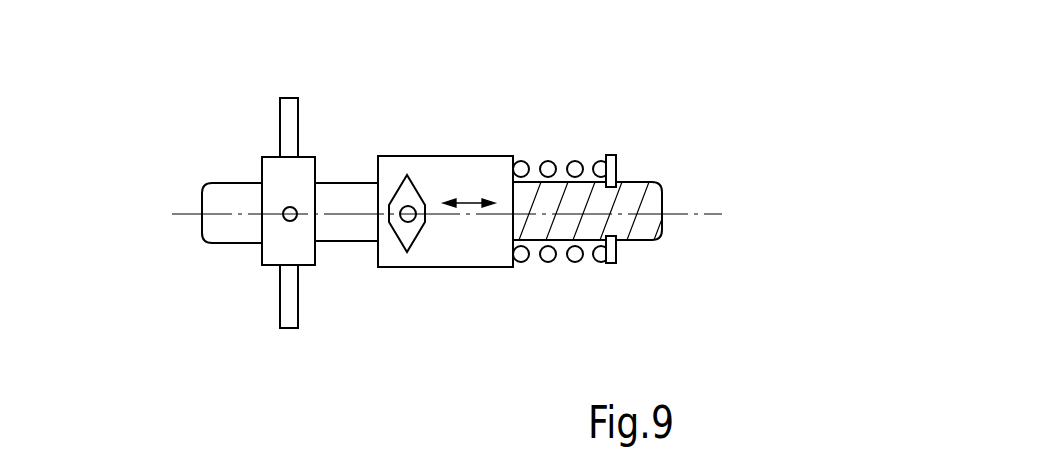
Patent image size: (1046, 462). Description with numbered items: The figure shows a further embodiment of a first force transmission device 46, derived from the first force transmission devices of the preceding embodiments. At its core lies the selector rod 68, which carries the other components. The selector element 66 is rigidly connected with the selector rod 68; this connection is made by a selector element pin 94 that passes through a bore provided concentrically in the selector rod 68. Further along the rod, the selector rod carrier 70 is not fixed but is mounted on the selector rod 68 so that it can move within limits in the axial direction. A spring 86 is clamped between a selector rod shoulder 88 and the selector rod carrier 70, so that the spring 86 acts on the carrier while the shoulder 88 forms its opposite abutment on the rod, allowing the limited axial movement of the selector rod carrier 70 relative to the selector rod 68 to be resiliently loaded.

The first force transmission device 46 is at (462, 201).
The selector element 66 is at (282, 173).
The selector rod 68 is at (217, 218).
The selector rod carrier 70 is at (440, 175).
The spring 86 is at (547, 262).
The selector rod shoulder 88 is at (614, 157).
The selector element pin 94 is at (297, 220).